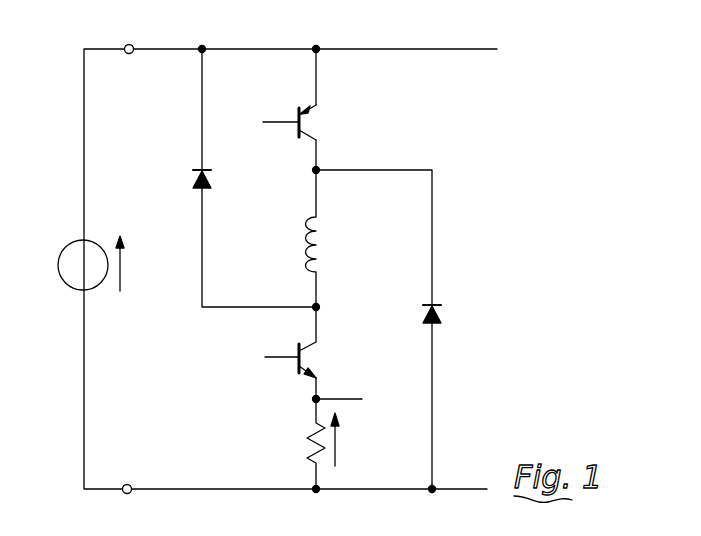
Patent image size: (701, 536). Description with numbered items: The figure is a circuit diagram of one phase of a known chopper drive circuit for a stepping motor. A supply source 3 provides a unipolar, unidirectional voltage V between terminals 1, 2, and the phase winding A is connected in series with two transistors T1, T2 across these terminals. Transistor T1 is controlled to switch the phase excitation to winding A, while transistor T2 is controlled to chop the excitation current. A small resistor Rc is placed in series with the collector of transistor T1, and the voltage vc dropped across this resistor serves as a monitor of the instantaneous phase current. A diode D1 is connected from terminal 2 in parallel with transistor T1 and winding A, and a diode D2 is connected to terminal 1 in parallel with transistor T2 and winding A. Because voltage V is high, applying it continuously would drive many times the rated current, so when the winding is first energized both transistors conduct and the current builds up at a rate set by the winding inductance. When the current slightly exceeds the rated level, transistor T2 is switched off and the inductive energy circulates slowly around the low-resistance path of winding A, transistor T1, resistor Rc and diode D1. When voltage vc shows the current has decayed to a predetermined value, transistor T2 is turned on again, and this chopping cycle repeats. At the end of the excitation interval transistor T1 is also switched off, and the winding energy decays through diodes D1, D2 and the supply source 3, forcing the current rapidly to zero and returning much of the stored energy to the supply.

The terminal 1 is at (130, 54).
The terminal 2 is at (129, 484).
The supply source 3 is at (67, 248).
The supply voltage V is at (129, 263).
The diode D1 is at (442, 315).
The diode D2 is at (212, 177).
The transistor T1 is at (297, 346).
The transistor T2 is at (297, 135).
The phase winding A is at (306, 246).
The resistor Rc is at (306, 441).
The voltage vc is at (348, 439).